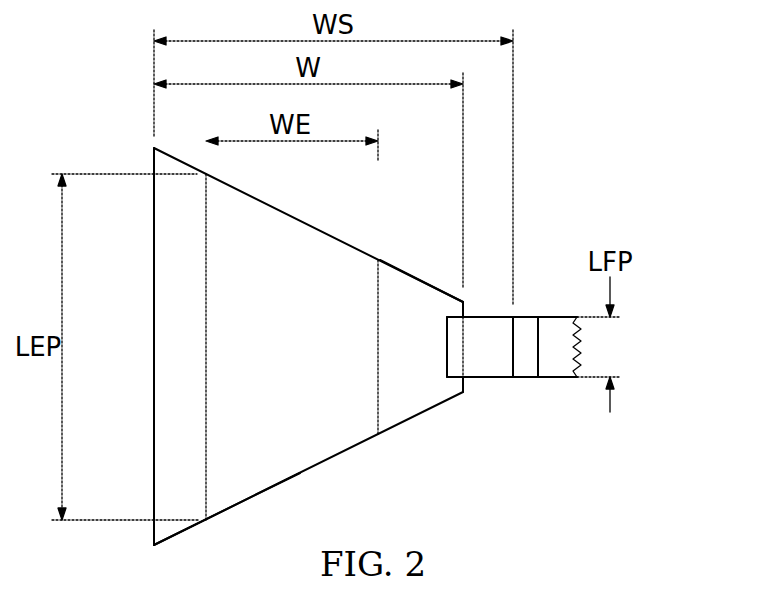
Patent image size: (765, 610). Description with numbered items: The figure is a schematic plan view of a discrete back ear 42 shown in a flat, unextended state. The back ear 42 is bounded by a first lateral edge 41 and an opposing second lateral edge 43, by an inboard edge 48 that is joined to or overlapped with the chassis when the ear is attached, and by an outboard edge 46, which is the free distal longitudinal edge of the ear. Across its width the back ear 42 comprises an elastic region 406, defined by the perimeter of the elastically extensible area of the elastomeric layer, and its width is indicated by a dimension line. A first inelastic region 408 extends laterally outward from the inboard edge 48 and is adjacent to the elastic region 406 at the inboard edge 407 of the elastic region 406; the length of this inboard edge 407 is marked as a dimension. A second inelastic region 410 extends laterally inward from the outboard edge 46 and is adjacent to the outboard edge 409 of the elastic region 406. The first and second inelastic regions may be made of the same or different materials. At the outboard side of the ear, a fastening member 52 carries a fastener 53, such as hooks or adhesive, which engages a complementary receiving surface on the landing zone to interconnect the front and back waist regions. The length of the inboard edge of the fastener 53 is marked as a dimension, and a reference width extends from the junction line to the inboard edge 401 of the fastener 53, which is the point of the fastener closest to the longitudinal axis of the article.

The back ear 42 is at (124, 84).
The first lateral edge 41 is at (187, 165).
The second lateral edge 43 is at (357, 444).
The inboard edge 48 is at (153, 273).
The first inelastic region 408 is at (160, 393).
The inboard edge of the elastic region 407 is at (206, 328).
The outboard edge of the elastic region 409 is at (378, 365).
The second inelastic region 410 is at (408, 282).
The elastic region 406 is at (277, 475).
The outboard edge 46 is at (468, 312).
The inboard edge of the fastener 401 is at (512, 364).
The fastening member 52 is at (534, 308).
The fastener 53 is at (527, 370).